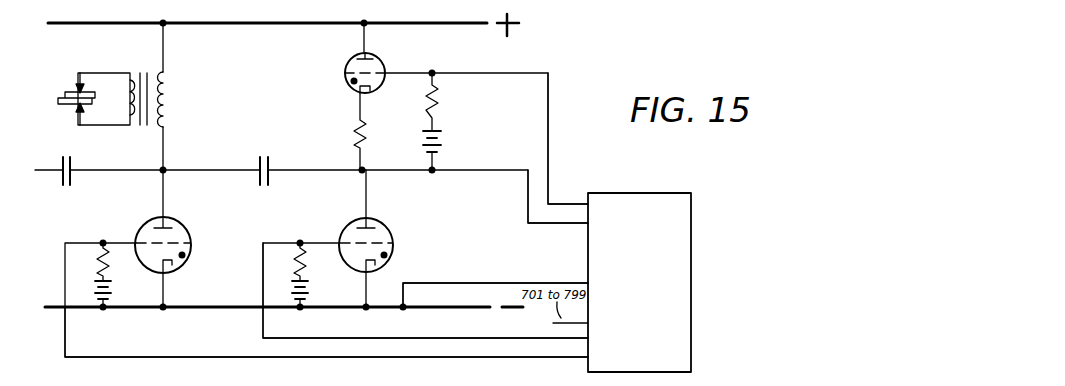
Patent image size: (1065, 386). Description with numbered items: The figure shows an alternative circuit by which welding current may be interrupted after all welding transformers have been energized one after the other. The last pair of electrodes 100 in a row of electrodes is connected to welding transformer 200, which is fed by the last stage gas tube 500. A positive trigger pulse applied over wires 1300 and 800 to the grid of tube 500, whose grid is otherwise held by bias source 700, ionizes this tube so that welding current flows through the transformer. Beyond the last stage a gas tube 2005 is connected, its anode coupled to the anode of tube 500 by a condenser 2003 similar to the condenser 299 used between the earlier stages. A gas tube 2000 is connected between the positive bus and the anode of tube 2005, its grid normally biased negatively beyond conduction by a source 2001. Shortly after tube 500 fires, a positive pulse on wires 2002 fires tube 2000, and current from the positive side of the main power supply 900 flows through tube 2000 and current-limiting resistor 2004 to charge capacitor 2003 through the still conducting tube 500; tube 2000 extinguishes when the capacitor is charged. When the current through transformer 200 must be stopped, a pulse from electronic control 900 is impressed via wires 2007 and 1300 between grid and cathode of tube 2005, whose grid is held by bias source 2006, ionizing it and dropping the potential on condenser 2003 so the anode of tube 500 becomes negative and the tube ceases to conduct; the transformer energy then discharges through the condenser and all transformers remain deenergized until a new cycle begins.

The last pair of electrodes 100 is at (68, 110).
The welding transformer 200 is at (145, 70).
The condenser 299 is at (68, 160).
The last stage tube 500 is at (148, 232).
The bias source for tube 500 700 is at (111, 292).
The trigger wire 800 is at (68, 340).
The electronic control 900 is at (688, 252).
The trigger wire 1300 is at (448, 283).
The gas tube 2000 is at (373, 62).
The bias source 2001 is at (447, 137).
The wires 2002 is at (530, 182).
The condenser 2003 is at (268, 158).
The current-limiting resistor 2004 is at (366, 125).
The gas tube 2005 is at (386, 236).
The bias source 2006 is at (309, 291).
The wires 2007 is at (262, 272).